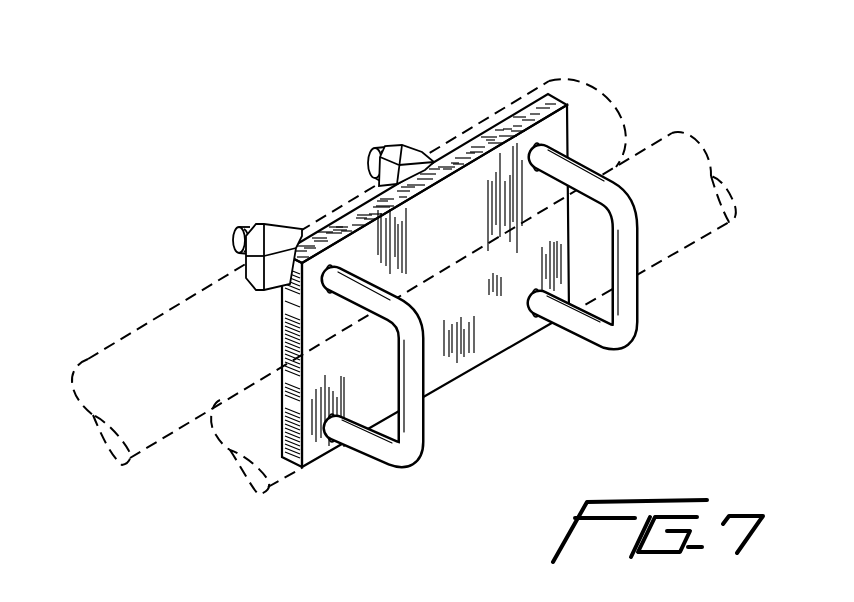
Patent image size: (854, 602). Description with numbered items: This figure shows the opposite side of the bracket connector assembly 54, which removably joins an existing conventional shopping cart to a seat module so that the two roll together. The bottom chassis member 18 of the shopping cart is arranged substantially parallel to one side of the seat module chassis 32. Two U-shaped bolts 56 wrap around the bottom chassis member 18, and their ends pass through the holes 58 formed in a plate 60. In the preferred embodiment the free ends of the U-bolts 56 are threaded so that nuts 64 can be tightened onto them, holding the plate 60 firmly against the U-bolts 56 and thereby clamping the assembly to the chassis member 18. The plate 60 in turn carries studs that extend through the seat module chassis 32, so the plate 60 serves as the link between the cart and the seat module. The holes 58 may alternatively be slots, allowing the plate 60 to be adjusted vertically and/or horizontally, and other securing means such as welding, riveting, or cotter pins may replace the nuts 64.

The bottom chassis member 18 is at (699, 223).
The seat module chassis 32 is at (112, 356).
The bracket connector assembly 54 is at (484, 88).
The U-shaped bolts 56 is at (639, 331).
The holes 58 is at (330, 267).
The plate 60 is at (460, 153).
The nuts 64 is at (262, 226).